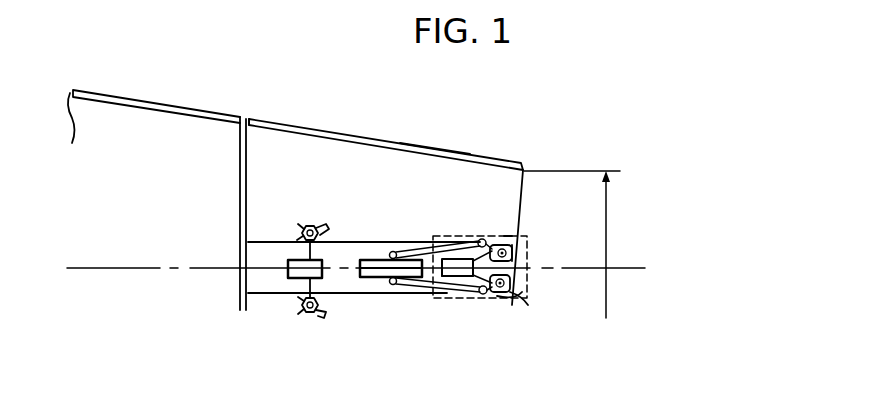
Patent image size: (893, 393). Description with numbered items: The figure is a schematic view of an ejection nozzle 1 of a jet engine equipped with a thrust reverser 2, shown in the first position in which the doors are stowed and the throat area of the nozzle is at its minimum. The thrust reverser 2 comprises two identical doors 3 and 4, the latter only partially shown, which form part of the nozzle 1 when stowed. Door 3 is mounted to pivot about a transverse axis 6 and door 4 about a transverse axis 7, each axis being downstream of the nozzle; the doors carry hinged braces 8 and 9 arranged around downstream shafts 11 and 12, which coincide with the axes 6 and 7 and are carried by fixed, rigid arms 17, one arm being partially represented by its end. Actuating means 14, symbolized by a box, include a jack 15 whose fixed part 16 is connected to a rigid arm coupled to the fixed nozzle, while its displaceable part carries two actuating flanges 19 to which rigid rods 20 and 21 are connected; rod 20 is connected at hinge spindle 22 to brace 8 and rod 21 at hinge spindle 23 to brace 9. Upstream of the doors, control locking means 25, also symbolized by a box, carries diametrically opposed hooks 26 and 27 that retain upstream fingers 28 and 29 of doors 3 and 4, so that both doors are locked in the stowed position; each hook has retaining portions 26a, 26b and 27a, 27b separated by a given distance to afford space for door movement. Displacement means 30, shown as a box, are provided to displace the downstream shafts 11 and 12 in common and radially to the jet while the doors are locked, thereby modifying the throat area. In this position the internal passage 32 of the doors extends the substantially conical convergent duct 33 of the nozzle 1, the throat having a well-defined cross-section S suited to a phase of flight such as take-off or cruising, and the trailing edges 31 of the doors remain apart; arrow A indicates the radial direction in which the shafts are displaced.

The ejection nozzle 1 is at (197, 100).
The thrust reverser 2 is at (350, 127).
The door 3 is at (427, 150).
The door 4 is at (267, 301).
The axis 6 is at (520, 237).
The axis 7 is at (507, 295).
The hinged brace 8 is at (504, 234).
The hinged brace 9 is at (520, 293).
The downstream shaft 11 is at (524, 256).
The downstream shaft 12 is at (518, 286).
The actuating means 14 is at (370, 287).
The jack 15 is at (362, 262).
The fixed part 16 is at (375, 257).
The rigid arm 17 is at (495, 294).
The actuating flange 19 is at (395, 250).
The rigid rod 20 is at (417, 243).
The rigid rod 21 is at (398, 284).
The hinge spindle 22 is at (481, 239).
The hinge spindle 23 is at (483, 295).
The control locking means 25 is at (275, 261).
The hook 26 is at (311, 223).
The retaining portion 26a is at (302, 230).
The retaining portion 26b is at (327, 223).
The hook 27 is at (312, 318).
The retaining portion 27a is at (300, 302).
The retaining portion 27b is at (322, 304).
The upstream finger 28 is at (297, 231).
The upstream finger 29 is at (310, 303).
The displacement means 30 is at (452, 289).
The trailing edge 31 is at (527, 175).
The internal passage 32 is at (279, 143).
The convergent duct 33 is at (112, 111).
The direction arrow A is at (536, 277).
The cross-section S is at (574, 244).